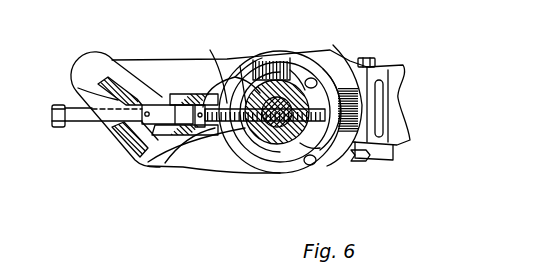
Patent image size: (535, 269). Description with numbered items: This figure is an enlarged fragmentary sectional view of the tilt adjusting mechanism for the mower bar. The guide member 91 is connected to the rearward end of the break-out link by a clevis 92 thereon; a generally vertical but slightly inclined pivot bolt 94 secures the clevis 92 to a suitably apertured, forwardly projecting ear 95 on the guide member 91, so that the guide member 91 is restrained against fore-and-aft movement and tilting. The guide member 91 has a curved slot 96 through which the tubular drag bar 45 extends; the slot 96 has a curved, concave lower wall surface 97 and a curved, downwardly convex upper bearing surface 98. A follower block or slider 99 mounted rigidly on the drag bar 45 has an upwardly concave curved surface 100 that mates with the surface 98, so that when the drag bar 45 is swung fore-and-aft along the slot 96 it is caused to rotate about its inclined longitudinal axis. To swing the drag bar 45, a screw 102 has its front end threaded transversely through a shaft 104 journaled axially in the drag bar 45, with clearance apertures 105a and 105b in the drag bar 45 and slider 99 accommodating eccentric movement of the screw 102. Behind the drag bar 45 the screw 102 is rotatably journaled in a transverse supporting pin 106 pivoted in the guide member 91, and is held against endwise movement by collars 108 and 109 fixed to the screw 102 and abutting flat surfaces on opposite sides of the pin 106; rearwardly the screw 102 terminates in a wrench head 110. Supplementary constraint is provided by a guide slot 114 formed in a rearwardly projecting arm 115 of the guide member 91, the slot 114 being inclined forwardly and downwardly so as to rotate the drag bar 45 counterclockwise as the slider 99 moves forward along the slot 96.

The drag bar 45 is at (303, 156).
The guide member 91 is at (312, 180).
The clevis 92 is at (390, 96).
The pivot bolt 94 is at (377, 59).
The ear 95 is at (353, 115).
The curved slot 96 is at (313, 164).
The lower wall surface 97 is at (247, 150).
The upper bearing surface 98 is at (318, 62).
The slider 99 is at (275, 62).
The curved surface 100 is at (291, 66).
The screw 102 is at (200, 104).
The shaft 104 is at (275, 145).
The clearance aperture 105a is at (240, 66).
The clearance aperture 105b is at (223, 168).
The supporting pin 106 is at (183, 95).
The collar 108 is at (147, 124).
The collar 109 is at (195, 94).
The wrench head 110 is at (58, 128).
The guide slot 114 is at (78, 85).
The arm 115 is at (187, 157).